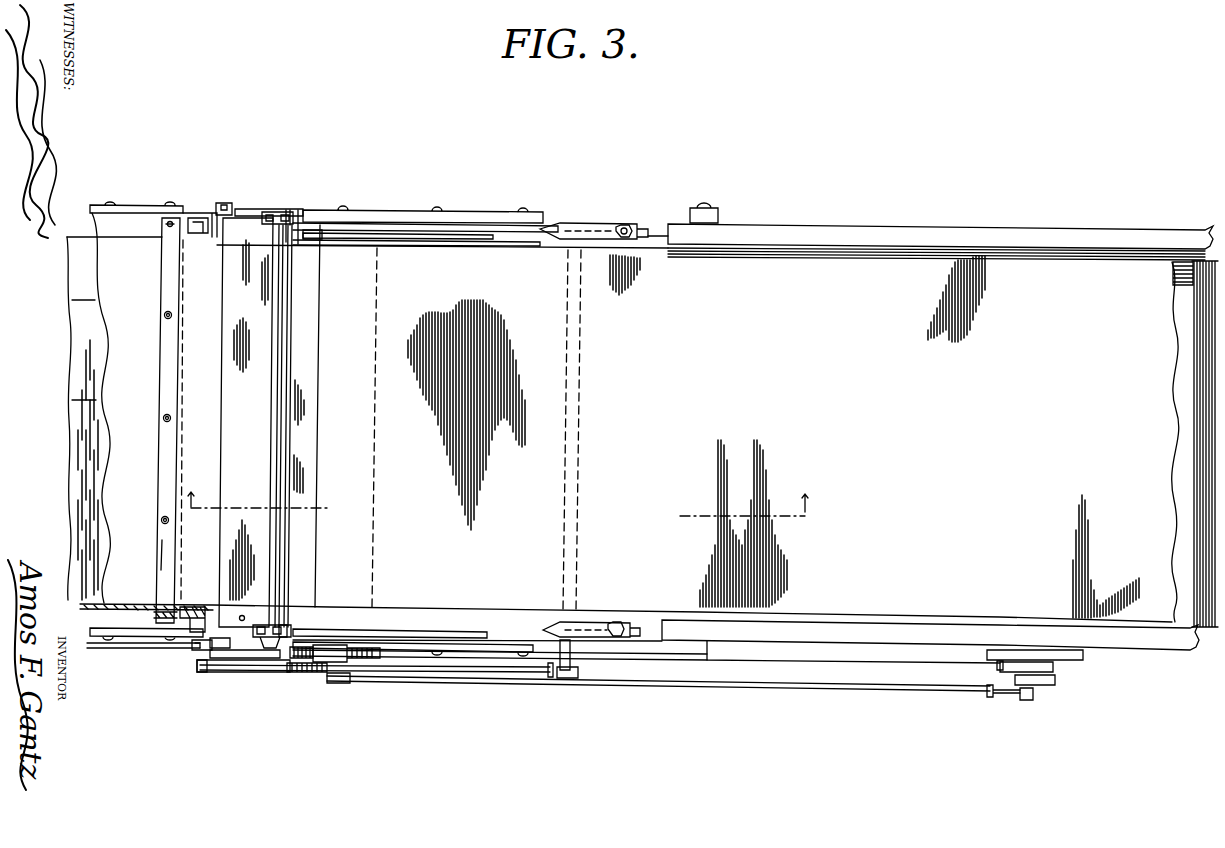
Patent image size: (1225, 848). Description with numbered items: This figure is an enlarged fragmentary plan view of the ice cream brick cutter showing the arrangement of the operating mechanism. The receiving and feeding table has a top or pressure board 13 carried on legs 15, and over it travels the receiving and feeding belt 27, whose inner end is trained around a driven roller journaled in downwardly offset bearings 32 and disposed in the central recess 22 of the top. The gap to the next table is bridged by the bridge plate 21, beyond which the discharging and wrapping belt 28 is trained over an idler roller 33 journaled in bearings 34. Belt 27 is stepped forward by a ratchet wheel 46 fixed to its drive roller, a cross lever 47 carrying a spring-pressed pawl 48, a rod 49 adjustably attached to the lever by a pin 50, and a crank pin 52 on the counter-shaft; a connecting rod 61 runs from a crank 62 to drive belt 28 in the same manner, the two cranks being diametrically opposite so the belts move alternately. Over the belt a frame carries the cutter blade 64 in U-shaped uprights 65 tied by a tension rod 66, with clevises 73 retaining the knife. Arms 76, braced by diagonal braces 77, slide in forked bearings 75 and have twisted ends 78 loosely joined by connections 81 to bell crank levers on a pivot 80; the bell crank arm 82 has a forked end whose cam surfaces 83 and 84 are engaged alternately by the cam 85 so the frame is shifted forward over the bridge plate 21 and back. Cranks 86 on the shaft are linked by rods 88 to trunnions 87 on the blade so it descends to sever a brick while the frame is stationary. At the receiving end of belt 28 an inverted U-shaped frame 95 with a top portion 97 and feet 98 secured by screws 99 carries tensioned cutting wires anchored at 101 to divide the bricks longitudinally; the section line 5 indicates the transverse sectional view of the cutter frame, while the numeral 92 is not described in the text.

The section line 5- 5 is at (498, 492).
The top or pressure board 13 is at (655, 241).
The legs 15 is at (719, 214).
The bridge plate 21 is at (246, 422).
The recess 22 is at (364, 240).
The endless carrier or traveling belt 27 is at (623, 417).
The endless carrier or traveling belt 28 is at (125, 282).
The bearings 32 is at (402, 215).
The idler roller 33 is at (200, 607).
The bearings 34 is at (133, 640).
The ratchet wheel 46 is at (302, 672).
The cross lever or arm 47 is at (331, 676).
The spring-pressed pawl 48 is at (305, 647).
The rod 49 is at (515, 682).
The pin 50 is at (345, 682).
The crank or crank pin 52 is at (1030, 700).
The connecting rod 61 is at (103, 655).
The crank or actuating connection 62 is at (1052, 665).
The cutter blade or knife 64 is at (277, 291).
The uprights or guides 65 is at (290, 212).
The transverse tension rod 66 is at (287, 448).
The U-shaped fasteners or clevises 73 is at (259, 625).
The slotted or forked bearings 75 is at (308, 239).
The arms 76 is at (412, 239).
The diagonal braces 77 is at (492, 246).
The twisted free ends 78 is at (604, 223).
The pivot 80 is at (572, 658).
The connections 81 is at (622, 226).
The horizontally extending arm 82 is at (448, 672).
The lower camming track or cam surface 83 is at (204, 672).
The cam surface 84 is at (232, 658).
The cam or actuating arm 85 is at (255, 673).
The cranks 86 is at (225, 203).
The trunnions 87 is at (277, 212).
The rods 88 is at (252, 209).
The side rail 92 is at (942, 238).
The frame 95 is at (152, 559).
The top or connecting portion 97 is at (164, 477).
The apertured feet or ears 98 is at (170, 220).
The screws 99 is at (166, 225).
The anchoring points 101 is at (163, 418).